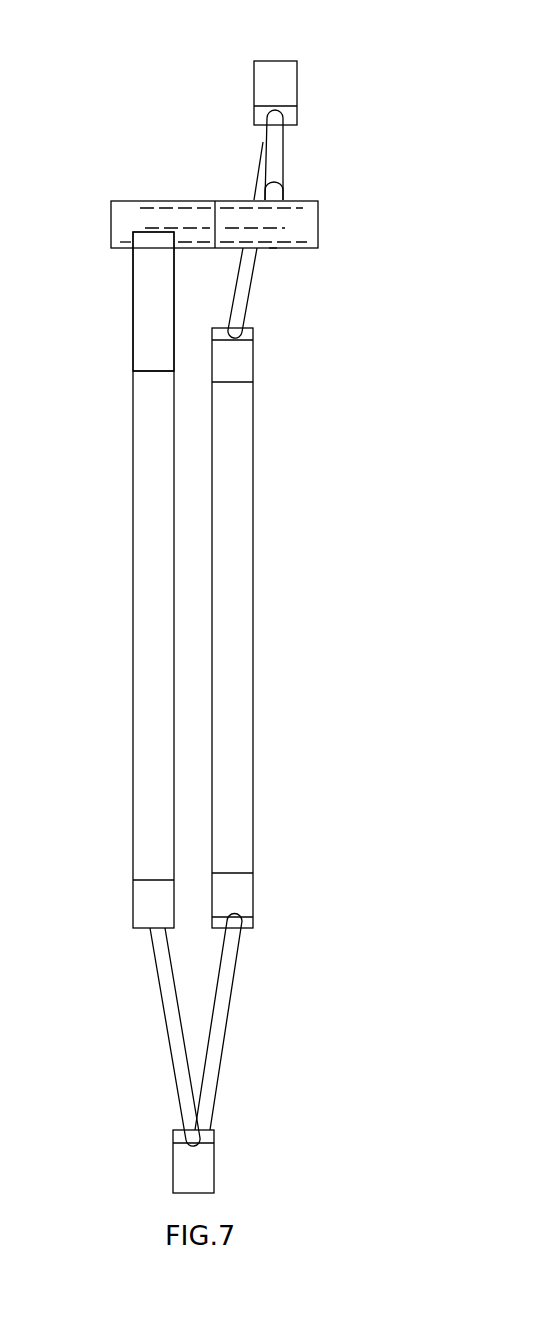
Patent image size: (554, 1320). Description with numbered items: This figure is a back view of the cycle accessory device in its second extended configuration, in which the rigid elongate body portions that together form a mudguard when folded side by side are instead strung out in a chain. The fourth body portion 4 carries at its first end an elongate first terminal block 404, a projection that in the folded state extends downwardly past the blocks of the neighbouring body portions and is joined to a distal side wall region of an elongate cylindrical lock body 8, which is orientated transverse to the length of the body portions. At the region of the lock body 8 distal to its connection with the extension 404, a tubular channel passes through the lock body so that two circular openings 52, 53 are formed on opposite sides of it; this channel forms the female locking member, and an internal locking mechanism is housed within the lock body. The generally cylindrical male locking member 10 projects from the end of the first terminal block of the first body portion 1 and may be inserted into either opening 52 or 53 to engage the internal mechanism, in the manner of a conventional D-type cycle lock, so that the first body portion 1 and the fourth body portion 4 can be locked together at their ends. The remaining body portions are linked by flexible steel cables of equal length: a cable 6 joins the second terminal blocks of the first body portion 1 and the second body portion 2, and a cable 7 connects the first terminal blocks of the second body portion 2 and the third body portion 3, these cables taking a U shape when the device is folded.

The first body portion 1 is at (264, 82).
The male locking member 10 is at (273, 163).
The circular opening 53 is at (277, 198).
The lock body 8 is at (310, 228).
The circular opening 52 is at (273, 250).
The fourth body portion 4 is at (158, 652).
The first terminal block of fourth body portion 404 is at (153, 272).
The second body portion 2 is at (228, 518).
The flexible steel cable 6 is at (247, 295).
The flexible steel cable 7 is at (220, 1015).
The third body portion 3 is at (207, 1154).